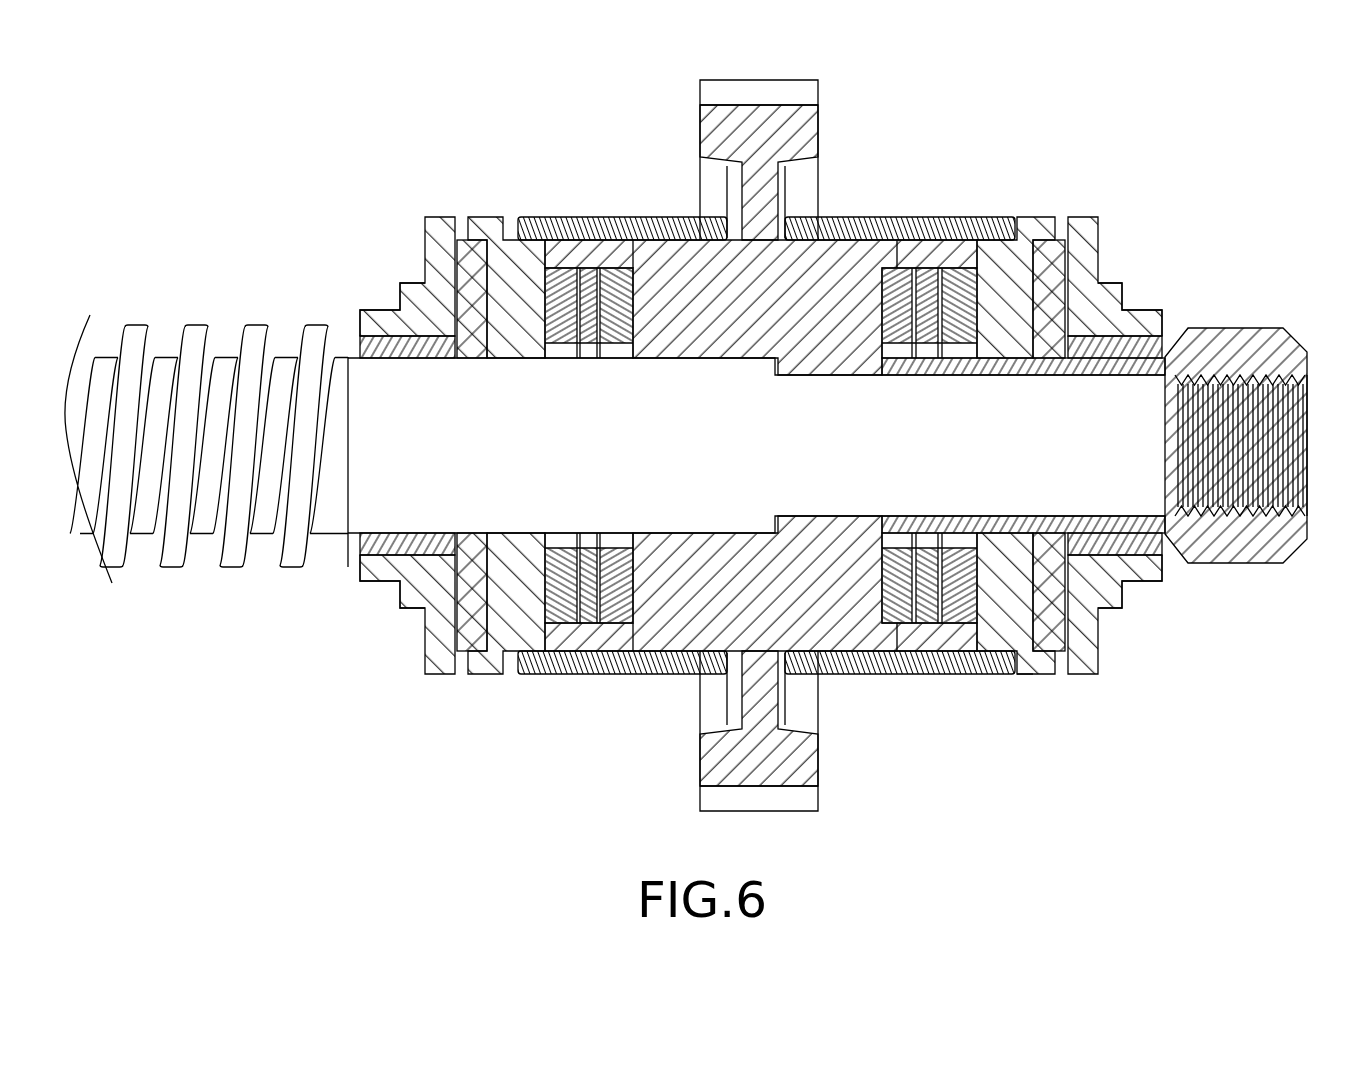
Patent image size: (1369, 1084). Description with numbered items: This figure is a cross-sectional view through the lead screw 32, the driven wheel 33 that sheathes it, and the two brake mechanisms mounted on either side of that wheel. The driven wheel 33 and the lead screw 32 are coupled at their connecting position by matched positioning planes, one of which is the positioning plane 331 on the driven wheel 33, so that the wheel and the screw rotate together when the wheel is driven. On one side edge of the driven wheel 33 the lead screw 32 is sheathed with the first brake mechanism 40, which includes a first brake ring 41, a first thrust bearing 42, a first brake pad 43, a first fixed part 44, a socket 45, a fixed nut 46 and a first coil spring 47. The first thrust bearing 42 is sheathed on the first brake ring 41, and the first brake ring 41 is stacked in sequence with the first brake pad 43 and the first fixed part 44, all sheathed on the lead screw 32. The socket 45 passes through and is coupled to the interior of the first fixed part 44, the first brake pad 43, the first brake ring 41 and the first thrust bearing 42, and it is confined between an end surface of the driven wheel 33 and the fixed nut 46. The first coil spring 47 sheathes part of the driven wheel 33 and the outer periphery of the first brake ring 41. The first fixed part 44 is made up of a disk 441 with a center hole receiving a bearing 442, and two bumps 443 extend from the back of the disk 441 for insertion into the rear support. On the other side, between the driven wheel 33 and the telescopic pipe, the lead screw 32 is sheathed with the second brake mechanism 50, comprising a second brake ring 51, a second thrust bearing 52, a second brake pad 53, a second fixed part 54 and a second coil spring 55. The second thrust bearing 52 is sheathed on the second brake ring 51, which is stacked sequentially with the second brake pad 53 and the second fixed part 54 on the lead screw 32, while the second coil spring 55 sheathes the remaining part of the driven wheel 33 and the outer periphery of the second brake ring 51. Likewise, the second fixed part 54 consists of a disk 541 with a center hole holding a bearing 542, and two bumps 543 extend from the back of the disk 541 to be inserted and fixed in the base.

The lead screw 32 is at (522, 495).
The driven wheel 33 is at (800, 756).
The positioning plane 331 is at (712, 510).
The first brake mechanism 40 is at (1038, 434).
The first brake ring 41 is at (1007, 257).
The first thrust bearing 42 is at (930, 275).
The first brake pad 43 is at (1047, 258).
The first fixed part 44 is at (1128, 465).
The disk 441 is at (1080, 663).
The bearing 442 is at (1140, 545).
The bump 443 is at (1110, 298).
The socket 45 is at (1028, 674).
The fixed nut 46 is at (1235, 340).
The first coil spring 47 is at (887, 237).
The second brake mechanism 50 is at (475, 434).
The second brake ring 51 is at (513, 257).
The second thrust bearing 52 is at (590, 275).
The second brake pad 53 is at (475, 260).
The second fixed part 54 is at (392, 465).
The disk 541 is at (438, 663).
The bearing 542 is at (380, 545).
The bump 543 is at (410, 297).
The second coil spring 55 is at (640, 232).